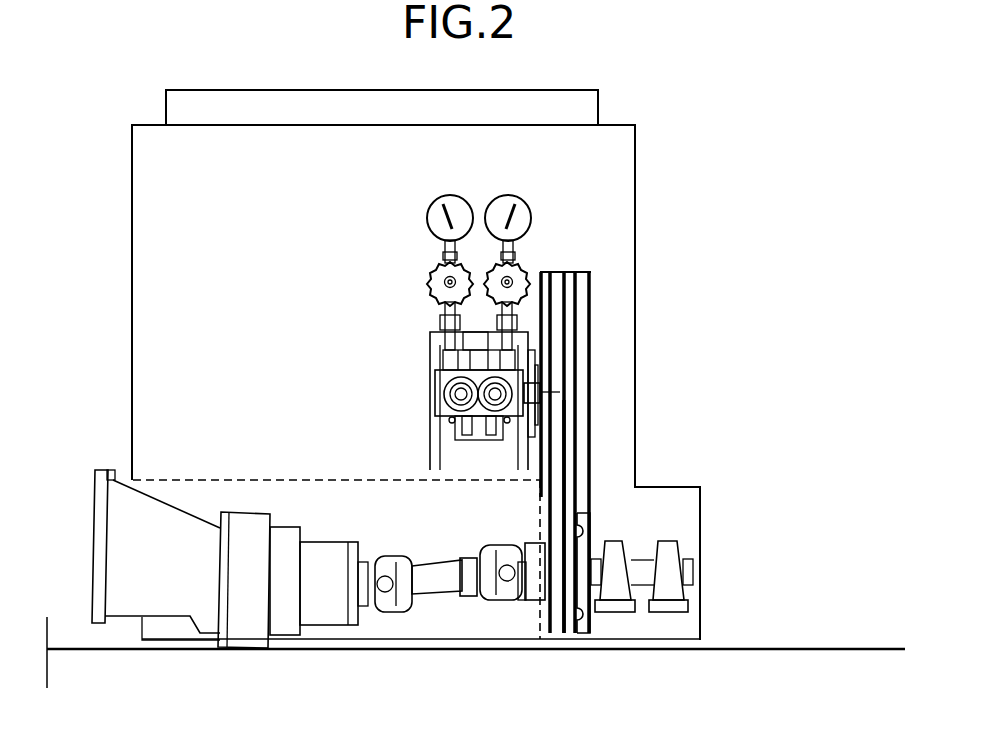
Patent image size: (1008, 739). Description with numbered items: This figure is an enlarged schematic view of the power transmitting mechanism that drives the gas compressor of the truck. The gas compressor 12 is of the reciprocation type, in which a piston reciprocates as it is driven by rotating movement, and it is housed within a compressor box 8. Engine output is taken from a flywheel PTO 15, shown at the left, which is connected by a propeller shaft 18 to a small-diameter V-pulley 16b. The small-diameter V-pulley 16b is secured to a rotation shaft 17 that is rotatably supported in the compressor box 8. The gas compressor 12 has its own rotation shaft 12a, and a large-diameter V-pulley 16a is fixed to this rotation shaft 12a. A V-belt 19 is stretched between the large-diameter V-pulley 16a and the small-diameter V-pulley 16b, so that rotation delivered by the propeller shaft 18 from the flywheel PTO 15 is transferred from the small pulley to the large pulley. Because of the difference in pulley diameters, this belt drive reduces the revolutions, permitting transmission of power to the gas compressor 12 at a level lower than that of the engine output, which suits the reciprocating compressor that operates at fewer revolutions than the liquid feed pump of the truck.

The compressor box 8 is at (637, 190).
The gas compressor 12 is at (432, 349).
The rotation shaft 12a is at (530, 393).
The flywheel PTO 15 is at (250, 637).
The large-diameter V-pulley 16a is at (580, 420).
The small-diameter V-pulley 16b is at (582, 607).
The rotation shaft 17 is at (645, 573).
The propeller shaft 18 is at (439, 588).
The V-belt 19 is at (565, 480).